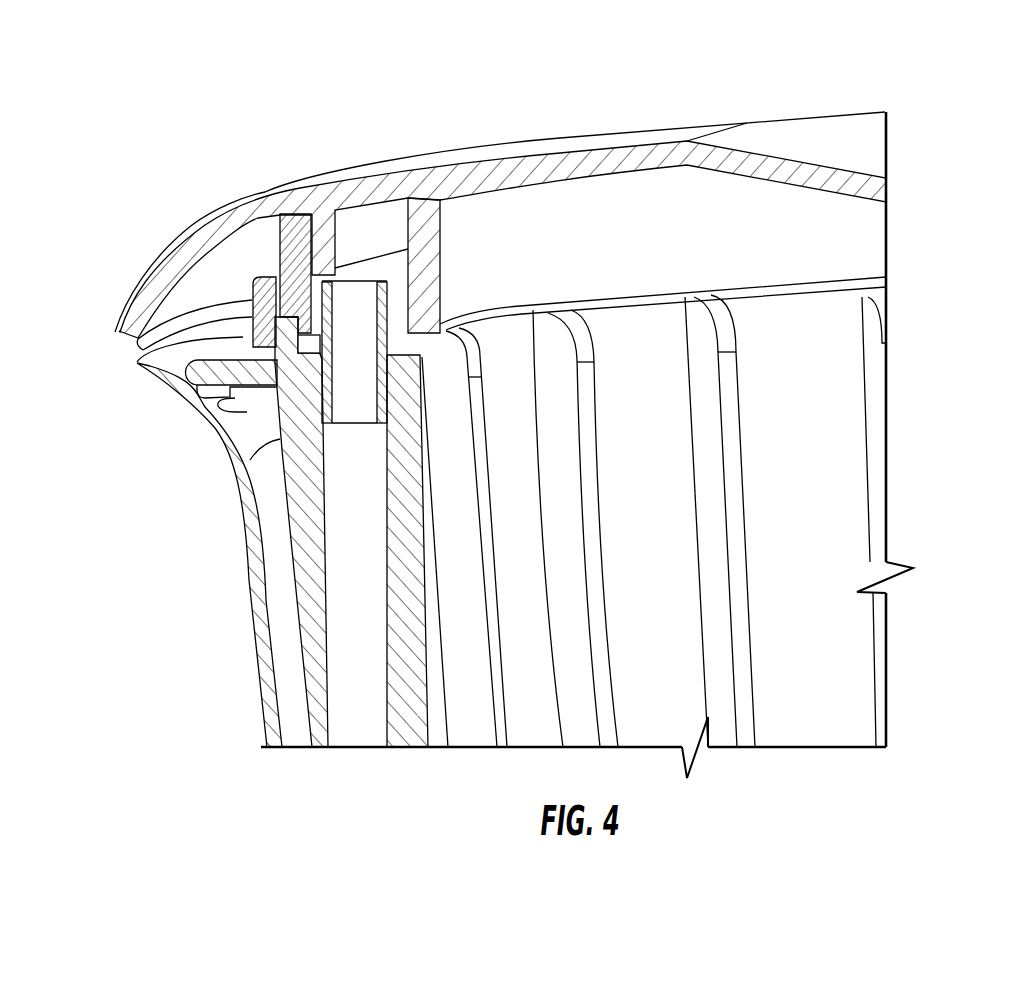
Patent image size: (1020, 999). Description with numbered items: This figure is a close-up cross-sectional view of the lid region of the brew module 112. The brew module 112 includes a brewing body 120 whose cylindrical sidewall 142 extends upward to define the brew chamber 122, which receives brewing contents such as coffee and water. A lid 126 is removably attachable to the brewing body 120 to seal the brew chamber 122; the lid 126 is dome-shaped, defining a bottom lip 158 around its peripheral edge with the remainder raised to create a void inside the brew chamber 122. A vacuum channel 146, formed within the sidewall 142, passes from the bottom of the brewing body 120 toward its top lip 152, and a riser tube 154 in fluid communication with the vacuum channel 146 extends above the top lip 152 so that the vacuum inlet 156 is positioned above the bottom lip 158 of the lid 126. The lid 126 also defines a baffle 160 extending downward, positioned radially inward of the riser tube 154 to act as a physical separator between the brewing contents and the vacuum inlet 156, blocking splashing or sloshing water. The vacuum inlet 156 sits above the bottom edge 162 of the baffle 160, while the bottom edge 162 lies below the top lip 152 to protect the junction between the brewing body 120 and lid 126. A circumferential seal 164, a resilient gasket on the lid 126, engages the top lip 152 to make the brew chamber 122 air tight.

The brew module 112 is at (250, 143).
The brewing body 120 is at (263, 710).
The brew chamber 122 is at (807, 703).
The lid 126 is at (790, 134).
The sidewall 142 is at (248, 623).
The vacuum channel 146 is at (339, 703).
The top lip 152 is at (289, 321).
The riser tube 154 is at (392, 350).
The vacuum inlet 156 is at (357, 268).
The bottom lip 158 is at (121, 349).
The baffle 160 is at (368, 298).
The bottom edge 162 is at (445, 336).
The circumferential seal 164 is at (293, 228).